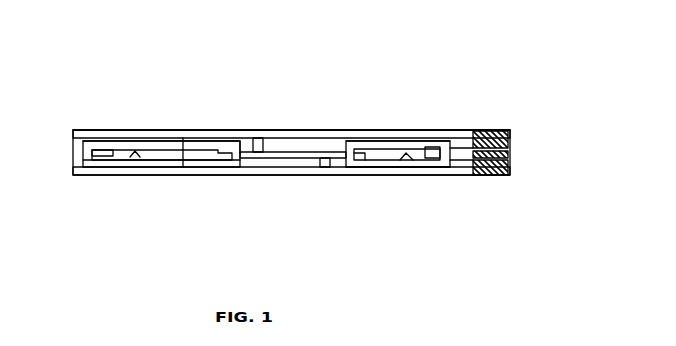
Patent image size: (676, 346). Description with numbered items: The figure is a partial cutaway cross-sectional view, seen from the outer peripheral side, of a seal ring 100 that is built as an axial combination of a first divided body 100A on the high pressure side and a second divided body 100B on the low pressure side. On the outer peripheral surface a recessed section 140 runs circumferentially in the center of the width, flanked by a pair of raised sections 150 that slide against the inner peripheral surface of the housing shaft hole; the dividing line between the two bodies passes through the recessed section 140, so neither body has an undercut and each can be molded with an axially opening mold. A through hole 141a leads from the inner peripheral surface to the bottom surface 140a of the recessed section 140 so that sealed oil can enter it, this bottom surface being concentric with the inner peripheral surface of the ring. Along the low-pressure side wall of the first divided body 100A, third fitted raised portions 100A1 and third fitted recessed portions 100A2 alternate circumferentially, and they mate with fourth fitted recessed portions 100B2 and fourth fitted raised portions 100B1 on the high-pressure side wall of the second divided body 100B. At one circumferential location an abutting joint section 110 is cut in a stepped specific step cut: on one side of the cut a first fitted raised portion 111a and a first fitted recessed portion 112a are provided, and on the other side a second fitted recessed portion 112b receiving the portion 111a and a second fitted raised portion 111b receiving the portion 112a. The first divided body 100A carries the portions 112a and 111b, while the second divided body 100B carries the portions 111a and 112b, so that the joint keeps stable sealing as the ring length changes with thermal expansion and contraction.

The seal ring 100 is at (507, 102).
The first divided body 100A is at (387, 187).
The third fitted raised portion 100A1 is at (208, 133).
The third fitted recessed portion 100A2 is at (132, 175).
The second divided body 100B is at (397, 123).
The fourth fitted raised portion 100B1 is at (112, 177).
The fourth fitted recessed portion 100B2 is at (197, 175).
The abutting joint section 110 is at (292, 97).
The first fitted raised portion 111a is at (312, 132).
The second fitted raised portion 111b is at (287, 175).
The first fitted recessed portion 112a is at (325, 175).
The second fitted recessed portion 112b is at (260, 133).
The recessed section 140 is at (113, 133).
The end cap intermediate portion 140a is at (509, 156).
The through hole 141a is at (158, 133).
The raised section 150 is at (185, 133).